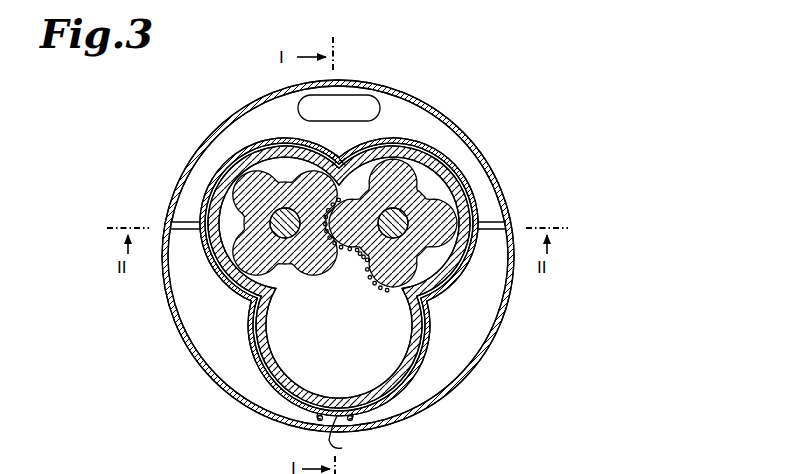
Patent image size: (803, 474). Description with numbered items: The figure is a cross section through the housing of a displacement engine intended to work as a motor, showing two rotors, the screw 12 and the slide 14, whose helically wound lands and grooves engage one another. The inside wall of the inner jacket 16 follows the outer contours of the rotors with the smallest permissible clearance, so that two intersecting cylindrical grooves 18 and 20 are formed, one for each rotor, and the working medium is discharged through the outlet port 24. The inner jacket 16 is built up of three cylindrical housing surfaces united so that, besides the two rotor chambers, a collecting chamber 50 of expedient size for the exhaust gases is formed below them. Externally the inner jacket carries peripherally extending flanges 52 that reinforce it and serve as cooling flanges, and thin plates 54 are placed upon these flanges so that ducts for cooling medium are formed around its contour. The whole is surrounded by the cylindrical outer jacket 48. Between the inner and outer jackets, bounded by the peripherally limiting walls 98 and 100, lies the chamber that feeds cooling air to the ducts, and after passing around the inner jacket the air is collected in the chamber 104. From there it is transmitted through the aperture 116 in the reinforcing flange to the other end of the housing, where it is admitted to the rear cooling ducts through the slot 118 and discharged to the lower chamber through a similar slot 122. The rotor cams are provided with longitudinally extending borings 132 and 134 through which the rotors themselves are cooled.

The screw 12 is at (458, 221).
The slide 14 is at (234, 288).
The inner jacket 16 is at (290, 151).
The cylindrical groove 18 is at (438, 192).
The cylindrical groove 20 is at (227, 226).
The outlet port 24 is at (337, 321).
The outer jacket 48 is at (493, 188).
The collecting chamber 50 is at (374, 381).
The flanges 52 is at (448, 171).
The thin plates 54 is at (262, 366).
The peripherally limiting wall 98 is at (493, 235).
The peripherally limiting wall 100 is at (180, 213).
The chamber 104 is at (408, 115).
The aperture 116 is at (348, 119).
The slot 118 is at (364, 144).
The slot 122 is at (342, 448).
The longitudinally extending boring 132 is at (378, 292).
The longitudinally extending boring 134 is at (330, 256).